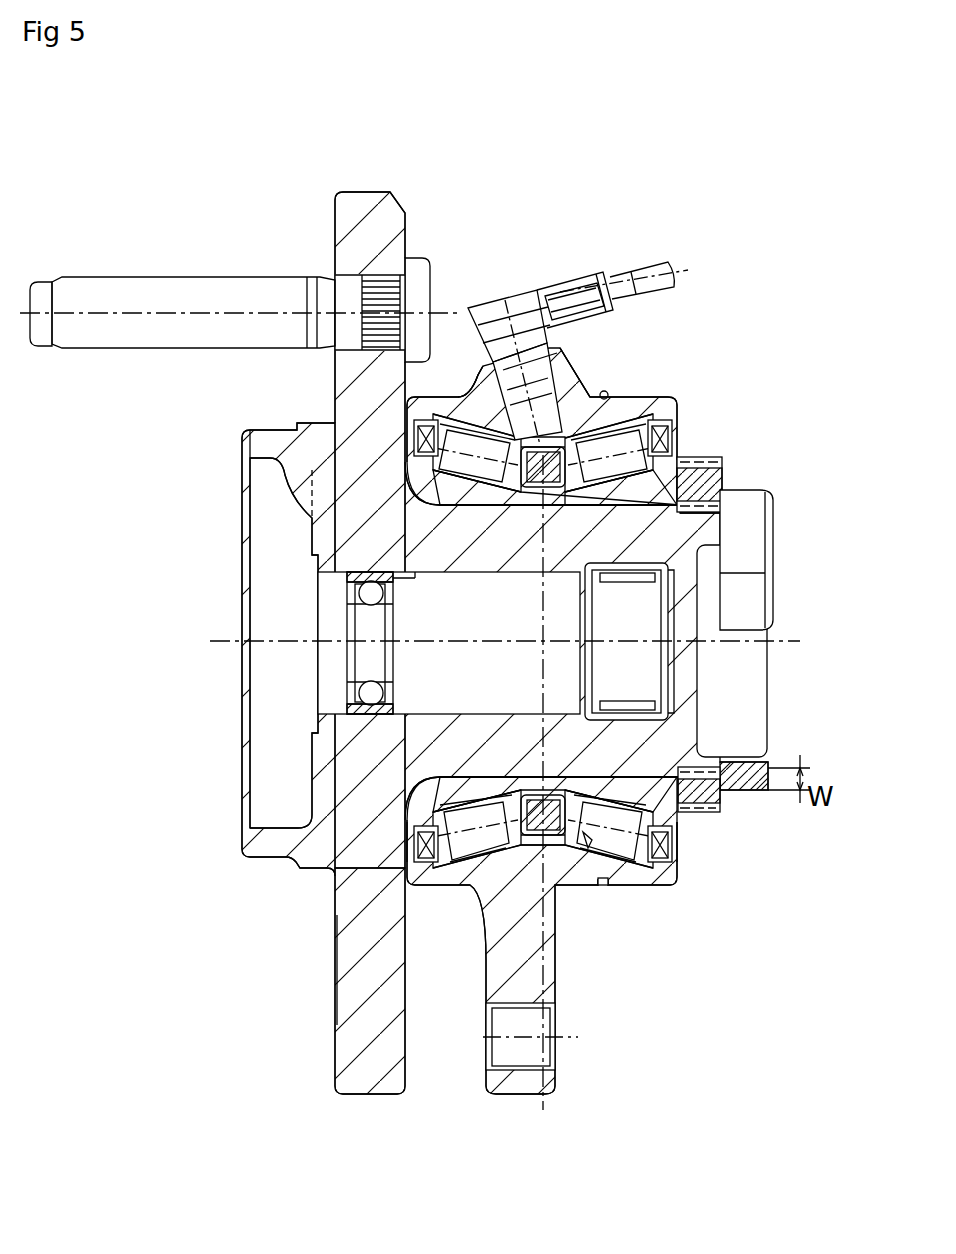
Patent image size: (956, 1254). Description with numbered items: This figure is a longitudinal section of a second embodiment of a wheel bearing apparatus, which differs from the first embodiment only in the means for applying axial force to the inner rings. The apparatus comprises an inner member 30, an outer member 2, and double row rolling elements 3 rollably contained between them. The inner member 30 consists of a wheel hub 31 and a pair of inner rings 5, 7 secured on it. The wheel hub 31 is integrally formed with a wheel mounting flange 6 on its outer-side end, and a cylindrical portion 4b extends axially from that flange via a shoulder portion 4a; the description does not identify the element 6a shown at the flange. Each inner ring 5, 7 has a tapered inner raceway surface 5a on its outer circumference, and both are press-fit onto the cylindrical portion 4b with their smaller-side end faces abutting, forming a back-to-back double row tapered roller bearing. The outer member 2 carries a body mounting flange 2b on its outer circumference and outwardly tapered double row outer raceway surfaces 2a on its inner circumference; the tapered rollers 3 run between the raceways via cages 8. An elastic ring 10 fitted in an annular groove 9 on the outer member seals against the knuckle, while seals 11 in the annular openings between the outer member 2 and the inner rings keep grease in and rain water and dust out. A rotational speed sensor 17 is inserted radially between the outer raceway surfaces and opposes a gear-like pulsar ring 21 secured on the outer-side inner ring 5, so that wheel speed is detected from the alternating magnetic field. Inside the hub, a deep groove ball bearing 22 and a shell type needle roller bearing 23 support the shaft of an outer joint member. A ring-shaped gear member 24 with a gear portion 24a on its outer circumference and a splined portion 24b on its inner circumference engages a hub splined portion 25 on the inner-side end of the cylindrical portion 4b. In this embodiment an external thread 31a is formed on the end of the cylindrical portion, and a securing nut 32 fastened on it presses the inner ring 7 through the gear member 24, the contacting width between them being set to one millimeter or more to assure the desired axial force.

The outer member 2 is at (574, 393).
The outer raceway surfaces 2a is at (460, 432).
The body mounting flange 2b is at (514, 1095).
The rolling elements 3 is at (468, 852).
The shoulder portion 4a is at (428, 470).
The cylindrical portion 4b is at (567, 490).
The outer-side inner ring 5 is at (500, 490).
The inner raceway surface 5a is at (665, 445).
The wheel mounting flange 6 is at (358, 205).
The hub bolt 6a is at (228, 292).
The inner-side inner ring 7 is at (627, 530).
The cages 8 is at (443, 868).
The annular groove 9 is at (588, 842).
The elastic ring 10 is at (603, 886).
The seals 11 is at (407, 852).
The rotational speed sensor 17 is at (512, 300).
The pulsar ring 21 is at (539, 448).
The outer-side rolling bearing 22 is at (360, 612).
The inner-side rolling bearing 23 is at (690, 707).
The gear member 24 is at (725, 492).
The gear portion 24a is at (725, 463).
The splined portion 24b is at (722, 510).
The hub splined portion 25 is at (680, 530).
The inner member 30 is at (303, 572).
The wheel hub 31 is at (363, 522).
The external thread 31a is at (768, 762).
The securing nut 32 is at (745, 613).